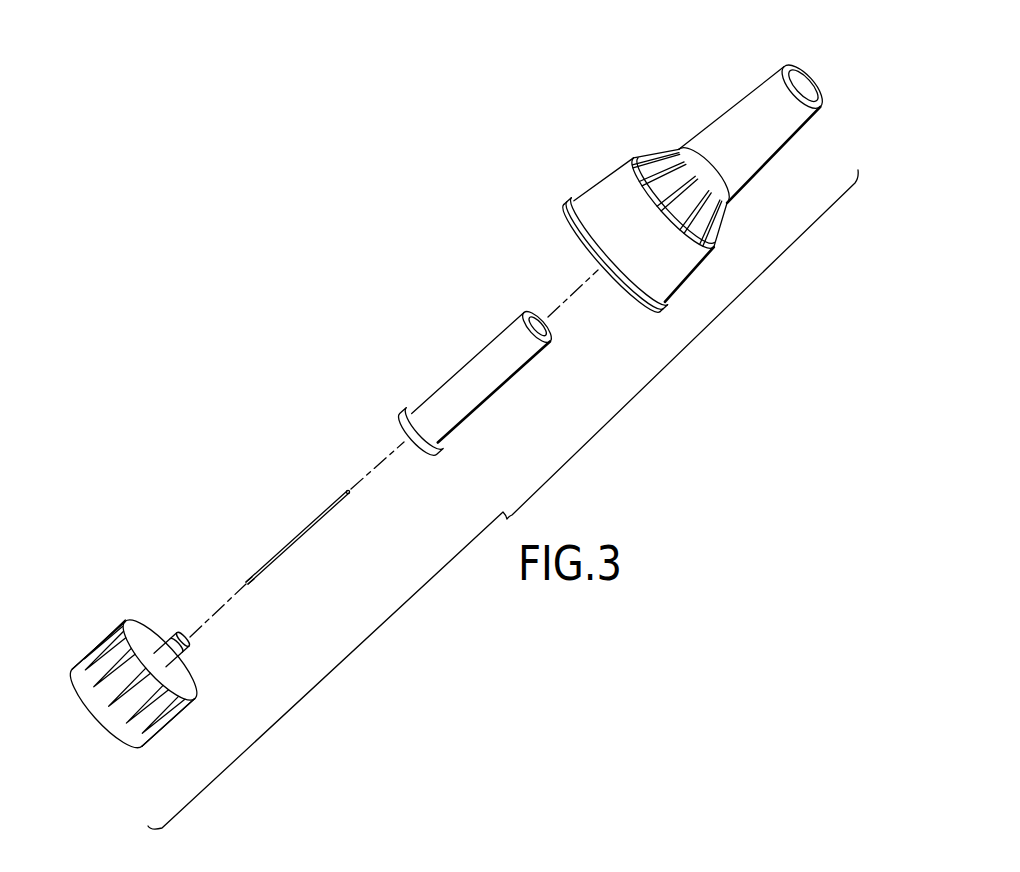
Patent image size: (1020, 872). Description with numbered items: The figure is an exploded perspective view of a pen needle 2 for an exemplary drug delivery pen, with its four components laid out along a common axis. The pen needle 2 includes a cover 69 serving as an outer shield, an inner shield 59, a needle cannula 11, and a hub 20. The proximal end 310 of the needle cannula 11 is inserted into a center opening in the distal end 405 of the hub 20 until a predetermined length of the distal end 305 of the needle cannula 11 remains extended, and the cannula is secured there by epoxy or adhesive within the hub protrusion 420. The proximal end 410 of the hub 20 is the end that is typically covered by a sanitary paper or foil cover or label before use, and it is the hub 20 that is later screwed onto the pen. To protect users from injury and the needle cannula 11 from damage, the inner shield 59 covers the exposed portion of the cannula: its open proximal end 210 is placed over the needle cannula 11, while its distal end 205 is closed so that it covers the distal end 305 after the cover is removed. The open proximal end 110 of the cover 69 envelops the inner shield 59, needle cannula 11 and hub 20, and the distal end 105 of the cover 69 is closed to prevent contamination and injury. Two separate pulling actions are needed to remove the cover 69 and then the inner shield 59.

The pen needle 2 is at (272, 391).
The needle cannula 11 is at (273, 563).
The hub 20 is at (145, 737).
The inner shield 59 is at (476, 397).
The cover 69 is at (770, 162).
The distal end of the cover 105 is at (787, 69).
The open proximal end of the cover 110 is at (563, 223).
The distal end of the inner shield 205 is at (551, 340).
The open proximal end of the inner shield 210 is at (428, 450).
The distal end of the needle cannula 305 is at (348, 490).
The proximal end of the needle cannula 310 is at (247, 582).
The distal end of the hub 405 is at (177, 633).
The proximal end of the hub 410 is at (113, 738).
The hub protrusion 420 is at (182, 657).